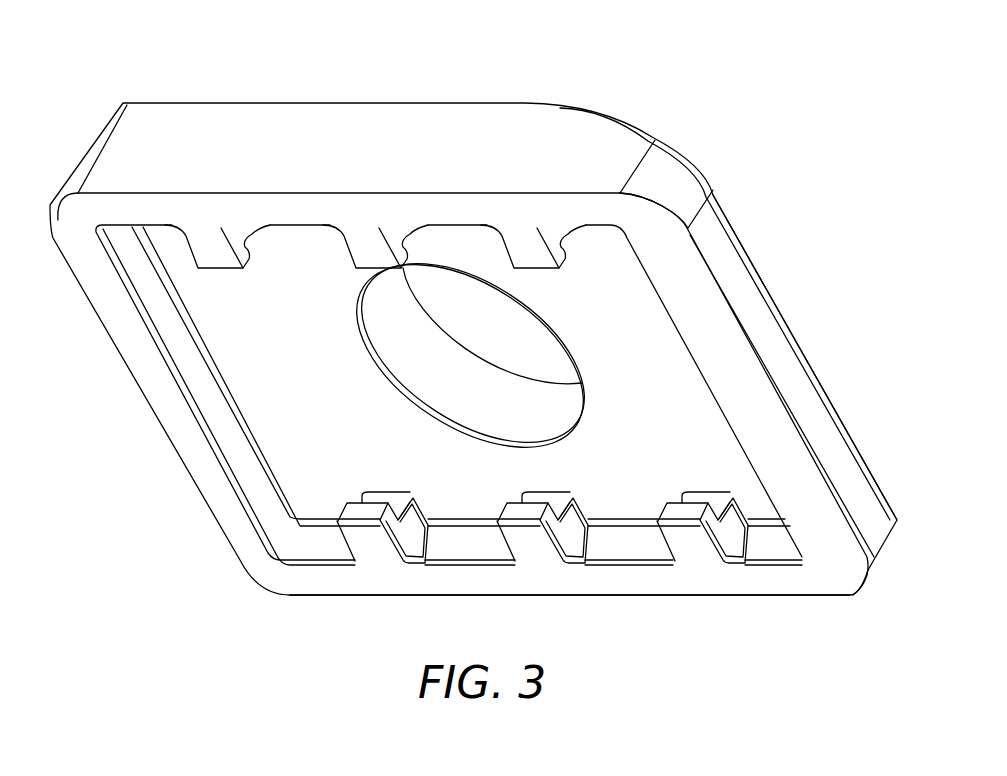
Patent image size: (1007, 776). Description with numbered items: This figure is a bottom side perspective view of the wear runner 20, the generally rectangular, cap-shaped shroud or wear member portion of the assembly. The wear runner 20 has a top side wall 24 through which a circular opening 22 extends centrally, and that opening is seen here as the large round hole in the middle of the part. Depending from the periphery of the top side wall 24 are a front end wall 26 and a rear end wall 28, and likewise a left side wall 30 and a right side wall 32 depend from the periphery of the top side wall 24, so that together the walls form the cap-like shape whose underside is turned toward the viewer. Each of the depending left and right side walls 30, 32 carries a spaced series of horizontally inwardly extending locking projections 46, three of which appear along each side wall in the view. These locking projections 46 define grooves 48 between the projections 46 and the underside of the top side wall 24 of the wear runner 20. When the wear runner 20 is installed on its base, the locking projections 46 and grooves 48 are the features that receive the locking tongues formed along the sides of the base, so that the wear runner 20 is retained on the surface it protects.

The wear runner 20 is at (478, 99).
The circular opening 22 is at (528, 305).
The top side wall 24 is at (317, 385).
The front end wall 26 is at (781, 339).
The rear end wall 28 is at (200, 388).
The left side wall 30 is at (340, 128).
The right side wall 32 is at (627, 540).
The locking projections 46 is at (213, 268).
The grooves 48 is at (252, 232).